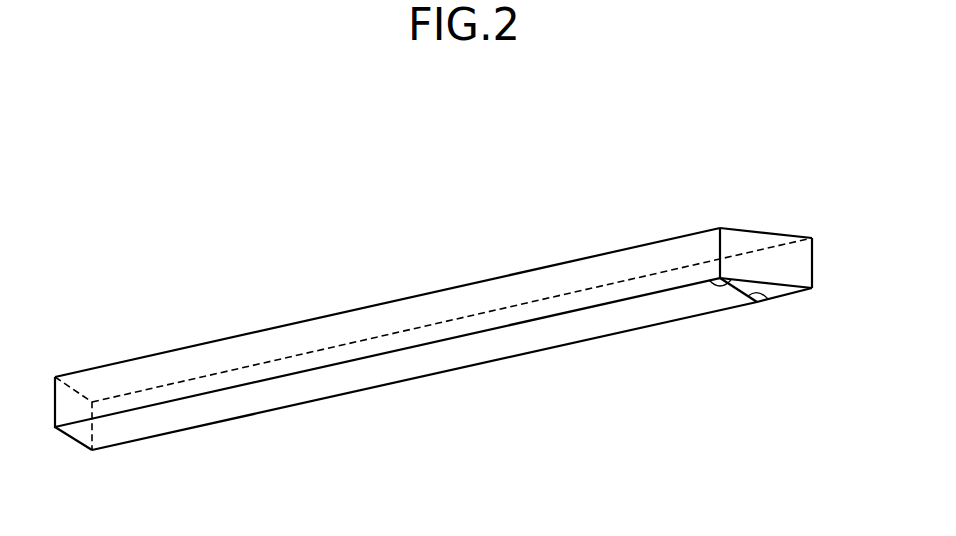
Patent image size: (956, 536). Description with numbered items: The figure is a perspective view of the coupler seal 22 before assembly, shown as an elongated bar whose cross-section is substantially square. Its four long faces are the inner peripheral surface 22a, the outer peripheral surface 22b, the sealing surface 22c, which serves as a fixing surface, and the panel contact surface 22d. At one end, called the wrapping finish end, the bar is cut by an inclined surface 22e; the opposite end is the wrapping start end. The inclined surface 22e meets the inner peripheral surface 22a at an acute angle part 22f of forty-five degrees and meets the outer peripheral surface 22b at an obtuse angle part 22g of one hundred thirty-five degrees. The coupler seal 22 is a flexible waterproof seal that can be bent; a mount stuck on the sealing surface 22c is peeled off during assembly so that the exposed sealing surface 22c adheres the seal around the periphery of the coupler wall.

The coupler seal 22 is at (636, 181).
The inner peripheral surface 22a is at (648, 318).
The outer peripheral surface 22b is at (500, 295).
The sealing surface 22c is at (482, 352).
The panel contact surface 22d is at (565, 260).
The inclined surface 22e is at (765, 263).
The acute angle part 22f is at (813, 258).
The obtuse angle part 22g is at (702, 262).